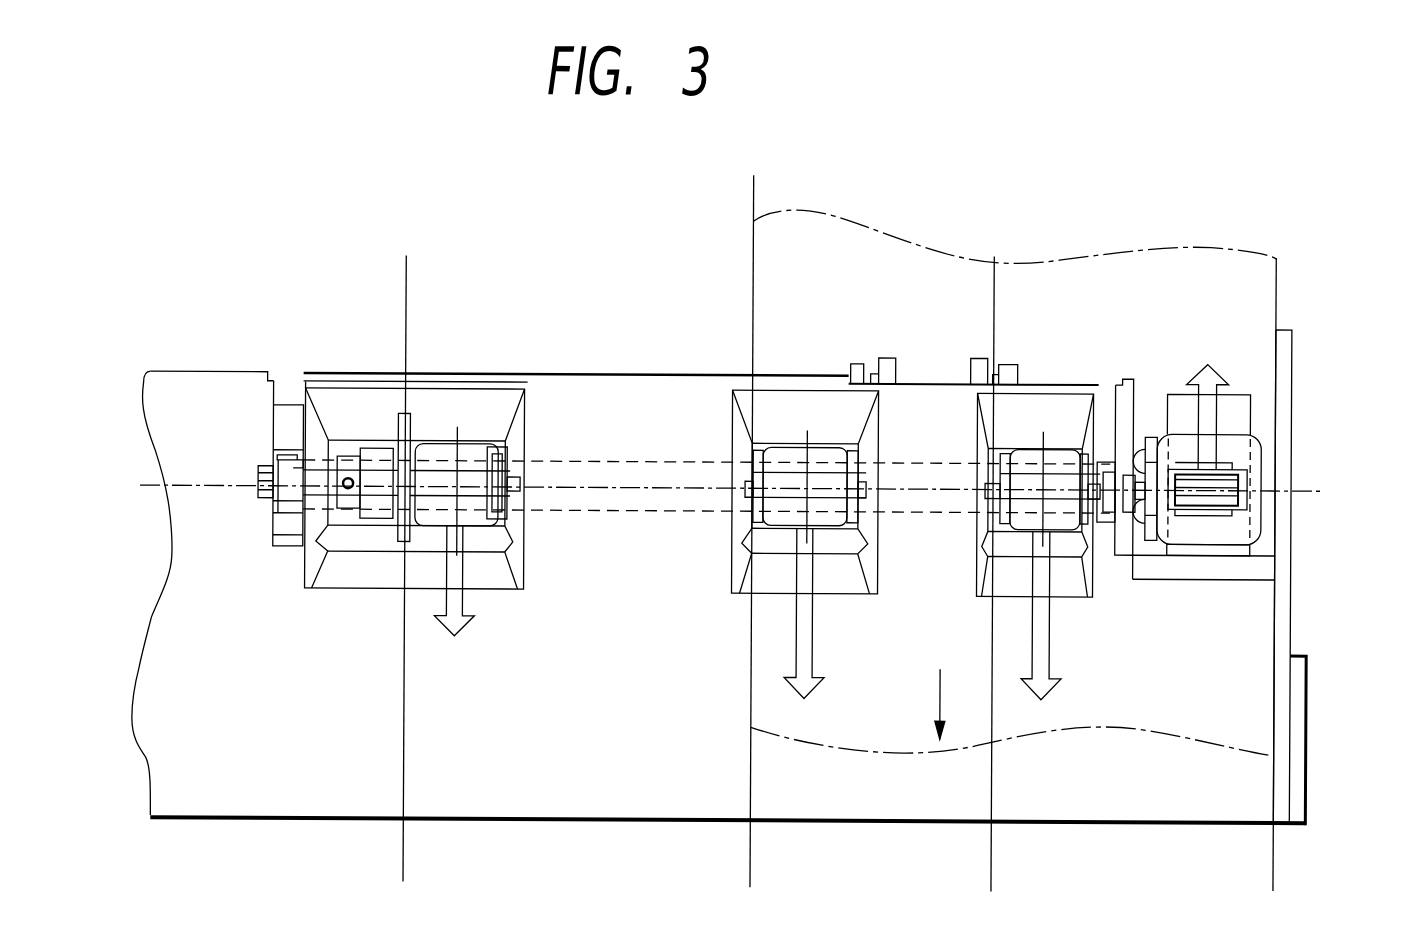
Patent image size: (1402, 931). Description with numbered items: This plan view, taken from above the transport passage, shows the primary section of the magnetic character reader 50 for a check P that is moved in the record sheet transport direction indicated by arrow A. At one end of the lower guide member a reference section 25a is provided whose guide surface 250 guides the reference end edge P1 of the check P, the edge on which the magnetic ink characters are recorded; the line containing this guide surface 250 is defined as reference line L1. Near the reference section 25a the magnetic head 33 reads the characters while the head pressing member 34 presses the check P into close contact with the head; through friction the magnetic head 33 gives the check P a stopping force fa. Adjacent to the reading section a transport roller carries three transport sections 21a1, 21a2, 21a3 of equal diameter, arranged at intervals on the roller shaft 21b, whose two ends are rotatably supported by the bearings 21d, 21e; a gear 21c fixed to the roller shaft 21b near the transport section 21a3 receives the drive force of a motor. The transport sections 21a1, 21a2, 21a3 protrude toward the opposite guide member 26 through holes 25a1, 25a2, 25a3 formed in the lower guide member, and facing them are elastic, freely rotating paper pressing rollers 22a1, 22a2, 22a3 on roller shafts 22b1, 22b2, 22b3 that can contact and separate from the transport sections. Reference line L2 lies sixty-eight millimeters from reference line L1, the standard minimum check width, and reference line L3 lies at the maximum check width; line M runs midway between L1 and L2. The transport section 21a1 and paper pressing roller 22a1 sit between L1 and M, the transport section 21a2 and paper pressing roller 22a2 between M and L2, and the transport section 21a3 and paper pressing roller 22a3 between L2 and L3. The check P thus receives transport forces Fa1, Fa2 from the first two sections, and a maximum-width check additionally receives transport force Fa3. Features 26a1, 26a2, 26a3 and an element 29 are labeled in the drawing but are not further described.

The magnetic character reader 50 is at (288, 193).
The bearing 21e is at (293, 462).
The gear 21c is at (370, 450).
The roller shaft 21b is at (596, 458).
The bearing 21d is at (1105, 392).
The transport section 21a1 is at (1003, 518).
The transport section 21a2 is at (857, 520).
The transport section 21a3 is at (510, 525).
The paper pressing roller 22a1 is at (1047, 455).
The paper pressing roller 22a2 is at (825, 458).
The paper pressing roller 22a3 is at (470, 450).
The roller shaft 22b1 is at (1005, 455).
The roller shaft 22b2 is at (785, 453).
The roller shaft 22b3 is at (435, 450).
The hole 25a1 is at (1093, 392).
The hole 25a2 is at (866, 390).
The hole 25a3 is at (510, 390).
The nozzle section 26a1 is at (1073, 394).
The nozzle section 26a2 is at (842, 387).
The nozzle section 26a3 is at (453, 416).
The guide member 26 is at (692, 397).
The coupling 29 is at (1155, 435).
The magnetic head 33 is at (1262, 428).
The head pressing member 34 is at (1245, 470).
The reference section 25a is at (1291, 548).
The guide surface 250 is at (1272, 606).
The stopping force fa is at (1207, 362).
The transport force Fa1 is at (1050, 653).
The transport force Fa2 is at (815, 653).
The transport force Fa3 is at (465, 600).
The record sheet transport direction A is at (939, 686).
The reference line L1 is at (1273, 850).
The reference line L2 is at (750, 837).
The reference line L3 is at (405, 838).
The straight line M is at (990, 845).
The check P is at (883, 743).
The reference end edge P1 is at (1275, 725).